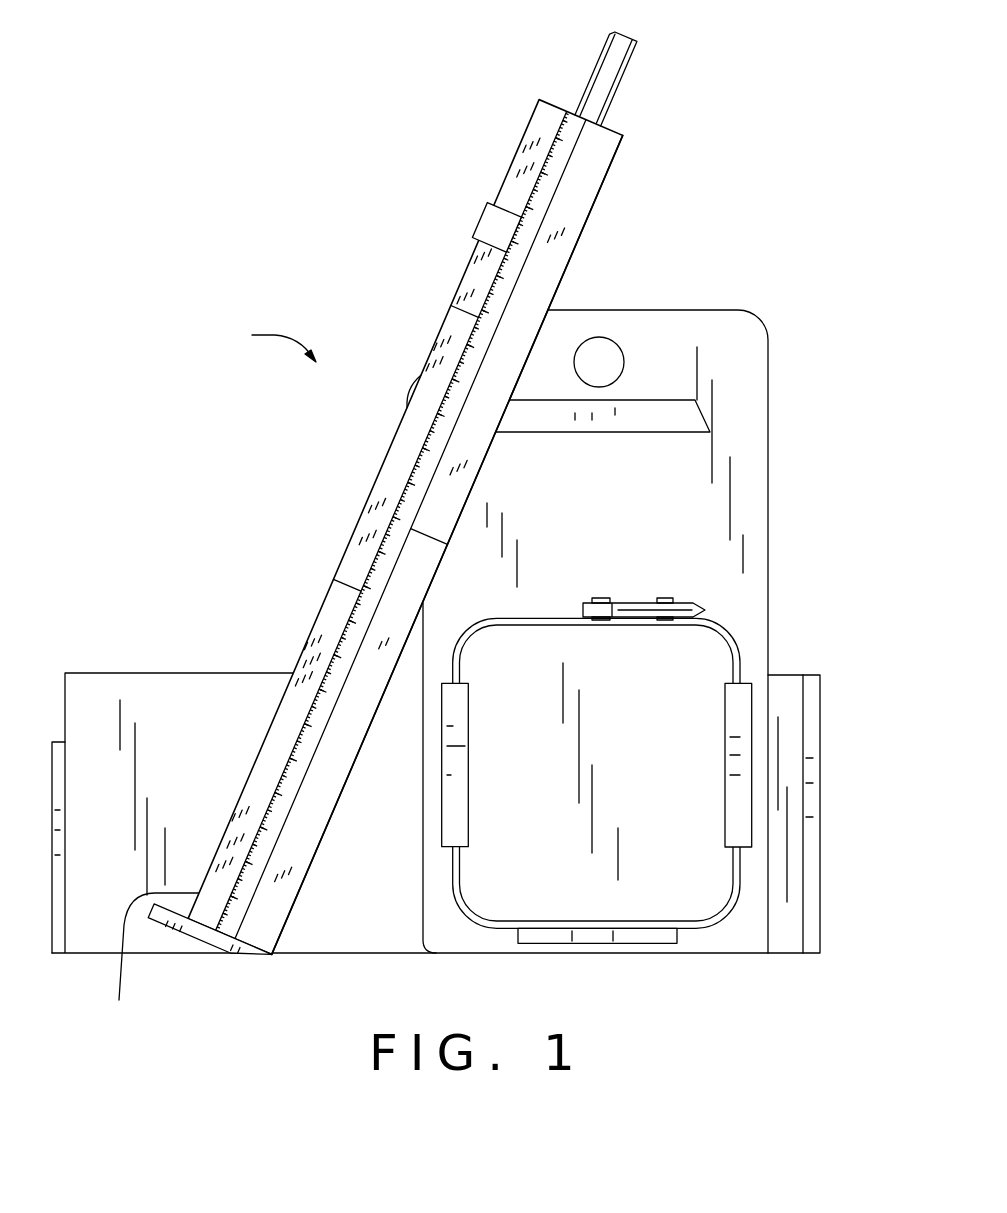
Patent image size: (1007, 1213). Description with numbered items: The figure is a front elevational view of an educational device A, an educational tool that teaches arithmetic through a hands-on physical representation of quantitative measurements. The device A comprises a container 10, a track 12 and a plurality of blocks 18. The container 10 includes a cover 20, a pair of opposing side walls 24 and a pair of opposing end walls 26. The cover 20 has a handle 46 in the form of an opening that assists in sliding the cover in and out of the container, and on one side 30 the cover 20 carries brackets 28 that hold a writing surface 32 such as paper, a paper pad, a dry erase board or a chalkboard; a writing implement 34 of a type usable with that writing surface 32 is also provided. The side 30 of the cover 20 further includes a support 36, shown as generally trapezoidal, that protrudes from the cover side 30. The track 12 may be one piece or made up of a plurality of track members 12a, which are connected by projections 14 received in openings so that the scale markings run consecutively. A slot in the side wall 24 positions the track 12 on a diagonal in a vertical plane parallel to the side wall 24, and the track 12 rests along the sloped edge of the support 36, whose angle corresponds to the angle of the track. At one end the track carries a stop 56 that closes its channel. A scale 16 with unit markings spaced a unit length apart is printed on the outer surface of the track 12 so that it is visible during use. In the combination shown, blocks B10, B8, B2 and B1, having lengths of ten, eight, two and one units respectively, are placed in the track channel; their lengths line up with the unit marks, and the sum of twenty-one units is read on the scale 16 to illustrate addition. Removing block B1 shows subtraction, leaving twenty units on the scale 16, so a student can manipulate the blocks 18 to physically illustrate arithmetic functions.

The container 10 is at (263, 672).
The track 12 is at (597, 157).
The track member 12a is at (493, 448).
The projection 14 is at (630, 62).
The scale 16 is at (546, 157).
The blocks 18 is at (156, 960).
The cover 20 is at (774, 332).
The side wall 24 is at (168, 690).
The end wall 26 is at (50, 763).
The bracket 28 is at (740, 712).
The cover side 30 is at (740, 385).
The writing surface 32 is at (703, 897).
The writing implement 34 is at (683, 603).
The support 36 is at (665, 401).
The handle 46 is at (603, 352).
The stop 56 is at (204, 950).
The block B1 is at (488, 202).
The block B2 is at (466, 262).
The block B8 is at (380, 496).
The block B10 is at (255, 797).
The educational device A is at (273, 344).